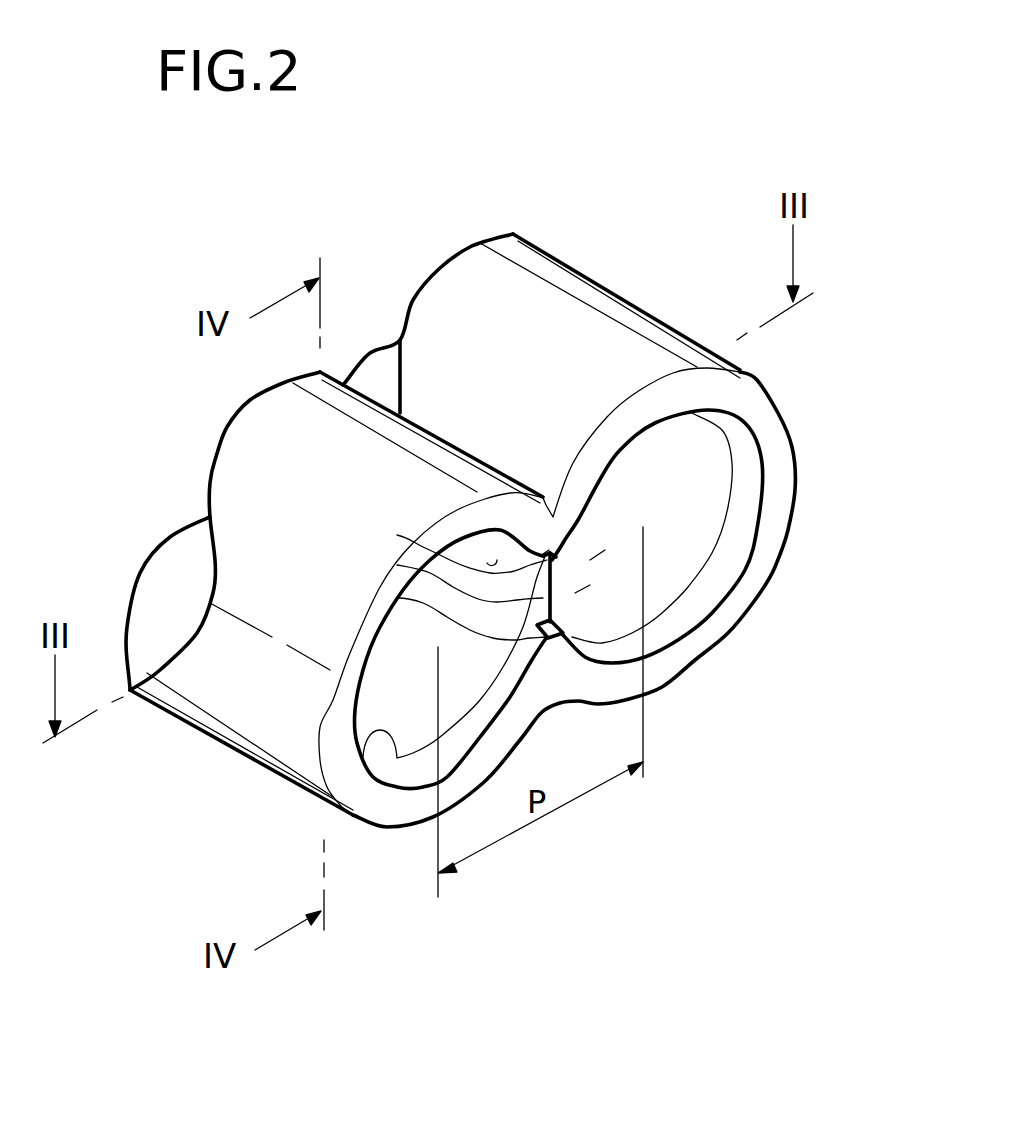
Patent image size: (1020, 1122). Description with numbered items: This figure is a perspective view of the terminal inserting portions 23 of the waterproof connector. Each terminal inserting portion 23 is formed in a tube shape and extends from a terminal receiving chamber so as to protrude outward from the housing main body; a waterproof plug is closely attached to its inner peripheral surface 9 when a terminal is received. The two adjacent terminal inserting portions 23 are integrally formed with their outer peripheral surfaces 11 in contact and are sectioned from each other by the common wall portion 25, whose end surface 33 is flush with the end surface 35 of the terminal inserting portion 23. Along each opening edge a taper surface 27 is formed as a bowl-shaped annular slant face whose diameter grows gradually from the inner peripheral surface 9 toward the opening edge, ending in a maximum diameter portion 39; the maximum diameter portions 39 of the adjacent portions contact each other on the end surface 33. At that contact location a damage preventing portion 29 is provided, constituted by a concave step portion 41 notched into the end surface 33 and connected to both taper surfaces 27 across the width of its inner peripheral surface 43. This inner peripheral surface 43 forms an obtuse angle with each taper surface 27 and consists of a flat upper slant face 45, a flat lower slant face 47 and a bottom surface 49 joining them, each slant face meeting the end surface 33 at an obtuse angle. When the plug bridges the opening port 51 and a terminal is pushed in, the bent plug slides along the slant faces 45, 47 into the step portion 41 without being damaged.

The inner peripheral surface 9 is at (708, 475).
The outer peripheral surface 11 is at (562, 272).
The terminal inserting portion 23 is at (613, 267).
The common wall portion 25 is at (487, 563).
The taper surface 27 is at (738, 433).
The damage preventing portion 29 is at (596, 559).
The end surface 33 is at (550, 530).
The end surface 35 is at (713, 632).
The maximum diameter portion 39 is at (713, 623).
The step portion 41 is at (568, 558).
The inner peripheral surface 43 is at (306, 515).
The upper slant face 45 is at (397, 535).
The lower slant face 47 is at (397, 598).
The bottom surface 49 is at (397, 565).
The opening port 51 is at (575, 593).